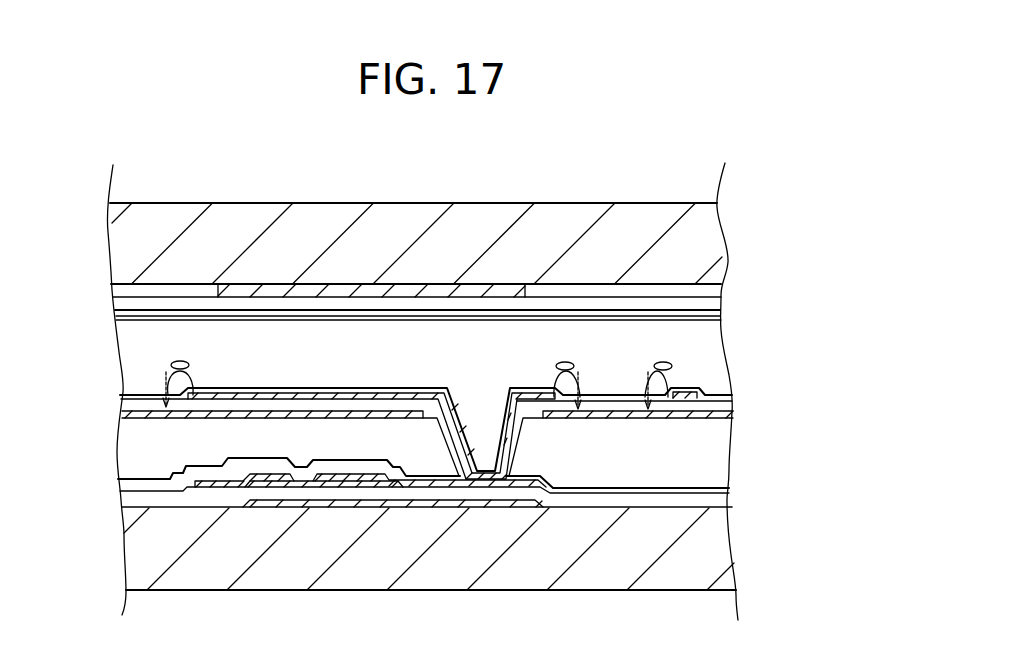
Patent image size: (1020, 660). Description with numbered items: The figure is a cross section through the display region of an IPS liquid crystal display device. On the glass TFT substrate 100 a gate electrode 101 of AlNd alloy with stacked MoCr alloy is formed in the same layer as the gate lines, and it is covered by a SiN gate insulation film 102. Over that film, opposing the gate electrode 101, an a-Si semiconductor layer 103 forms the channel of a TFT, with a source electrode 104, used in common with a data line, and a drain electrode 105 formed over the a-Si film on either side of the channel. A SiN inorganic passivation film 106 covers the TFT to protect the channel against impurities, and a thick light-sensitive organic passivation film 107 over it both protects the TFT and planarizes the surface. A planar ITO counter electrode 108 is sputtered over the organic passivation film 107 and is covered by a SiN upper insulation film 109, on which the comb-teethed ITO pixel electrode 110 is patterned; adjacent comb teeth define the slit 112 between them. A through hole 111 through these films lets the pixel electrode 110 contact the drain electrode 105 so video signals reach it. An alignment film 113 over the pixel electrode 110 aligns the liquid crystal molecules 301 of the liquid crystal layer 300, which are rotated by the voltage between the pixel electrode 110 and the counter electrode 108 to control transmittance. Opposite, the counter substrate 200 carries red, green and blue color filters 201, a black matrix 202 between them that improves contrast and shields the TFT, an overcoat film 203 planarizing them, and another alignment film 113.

The TFT substrate 100 is at (712, 550).
The gate electrode 101 is at (299, 502).
The gate insulation film 102 is at (130, 500).
The semiconductor layer 103 is at (347, 486).
The source electrode 104 is at (263, 478).
The drain electrode 105 is at (393, 480).
The inorganic passivation film 106 is at (130, 486).
The organic passivation film 107 is at (130, 452).
The counter electrode 108 is at (128, 413).
The upper insulation film 109 is at (128, 403).
The pixel electrode 110 is at (389, 396).
The through hole 111 is at (483, 478).
The slit 112 is at (606, 397).
The alignment film 113 is at (715, 318).
The counter substrate 200 is at (712, 240).
The color filter 201 is at (712, 292).
The black matrix 202 is at (494, 290).
The overcoat film 203 is at (712, 304).
The liquid crystal layer 300 is at (710, 345).
The liquid crystal molecules 301 is at (663, 362).